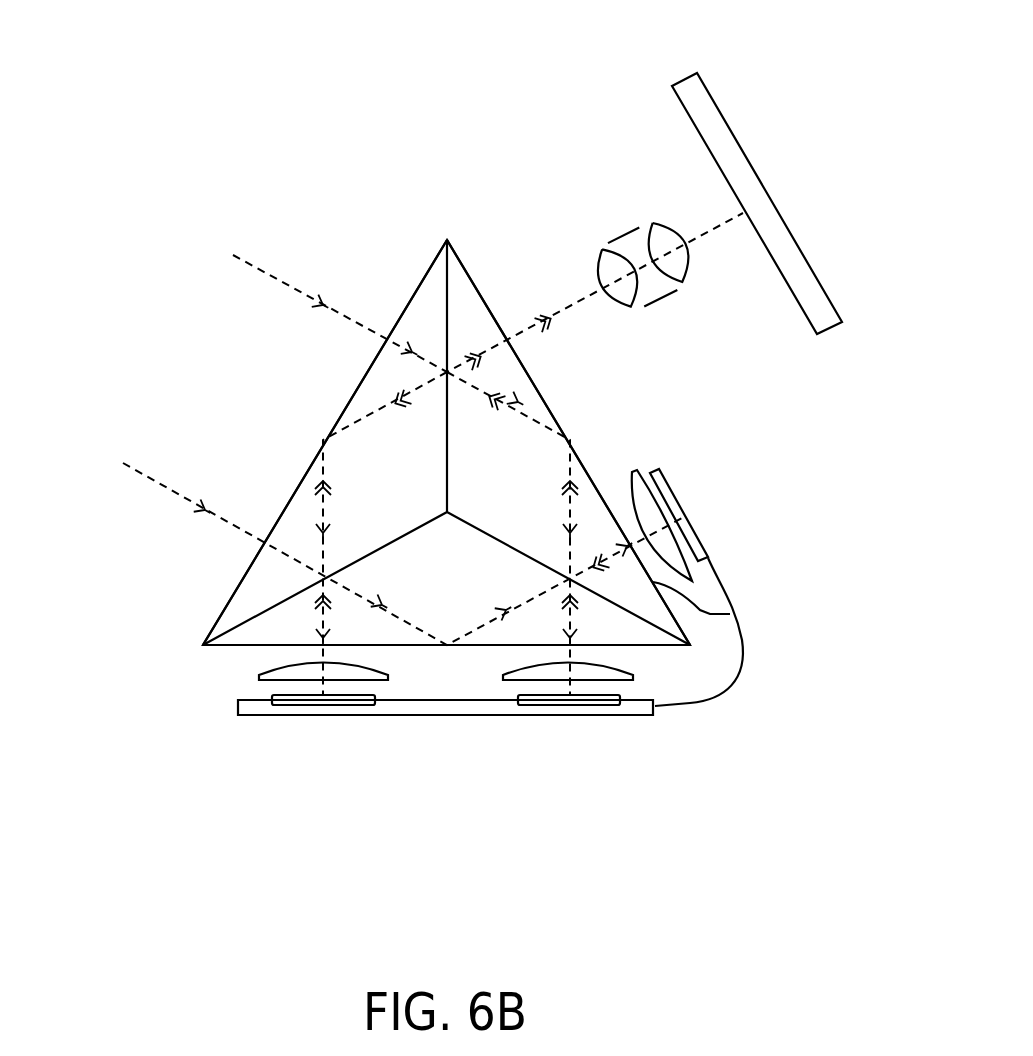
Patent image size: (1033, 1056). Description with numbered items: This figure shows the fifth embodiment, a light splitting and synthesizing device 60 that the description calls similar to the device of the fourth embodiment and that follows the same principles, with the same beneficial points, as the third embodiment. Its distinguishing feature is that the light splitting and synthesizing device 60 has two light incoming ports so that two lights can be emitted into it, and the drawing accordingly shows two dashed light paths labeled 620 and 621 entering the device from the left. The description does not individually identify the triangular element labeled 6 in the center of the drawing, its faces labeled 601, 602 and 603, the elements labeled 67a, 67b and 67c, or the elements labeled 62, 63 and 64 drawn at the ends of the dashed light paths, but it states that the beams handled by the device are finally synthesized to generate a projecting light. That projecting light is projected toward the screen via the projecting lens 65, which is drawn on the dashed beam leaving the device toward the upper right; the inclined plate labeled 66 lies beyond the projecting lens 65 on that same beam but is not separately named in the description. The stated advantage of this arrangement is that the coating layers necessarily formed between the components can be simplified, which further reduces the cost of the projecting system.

The optical module 6 is at (450, 135).
The first prism surface 601 is at (427, 312).
The second prism surface 602 is at (524, 455).
The third prism surface 603 is at (275, 627).
The first light beam 620 is at (283, 286).
The second light beam 621 is at (158, 487).
The projecting lens 65 is at (630, 252).
The mirror 66 is at (800, 250).
The lens 67a is at (637, 478).
The lens 67b is at (615, 681).
The lens 67c is at (275, 680).
The photodetector 62 is at (700, 537).
The light splitting and synthesizing device 60 is at (730, 614).
The photodetector 63 is at (532, 705).
The light emitting element 64 is at (295, 705).